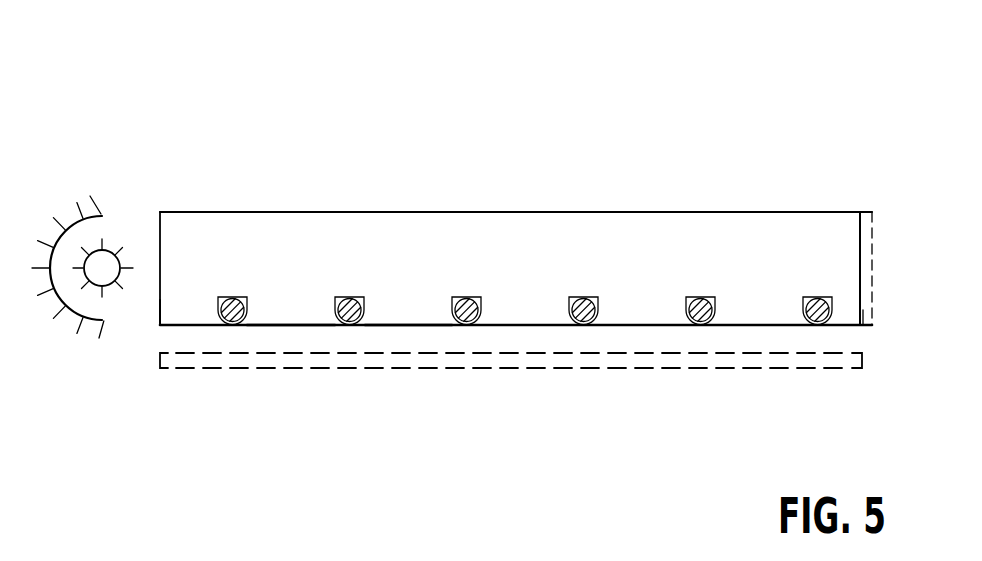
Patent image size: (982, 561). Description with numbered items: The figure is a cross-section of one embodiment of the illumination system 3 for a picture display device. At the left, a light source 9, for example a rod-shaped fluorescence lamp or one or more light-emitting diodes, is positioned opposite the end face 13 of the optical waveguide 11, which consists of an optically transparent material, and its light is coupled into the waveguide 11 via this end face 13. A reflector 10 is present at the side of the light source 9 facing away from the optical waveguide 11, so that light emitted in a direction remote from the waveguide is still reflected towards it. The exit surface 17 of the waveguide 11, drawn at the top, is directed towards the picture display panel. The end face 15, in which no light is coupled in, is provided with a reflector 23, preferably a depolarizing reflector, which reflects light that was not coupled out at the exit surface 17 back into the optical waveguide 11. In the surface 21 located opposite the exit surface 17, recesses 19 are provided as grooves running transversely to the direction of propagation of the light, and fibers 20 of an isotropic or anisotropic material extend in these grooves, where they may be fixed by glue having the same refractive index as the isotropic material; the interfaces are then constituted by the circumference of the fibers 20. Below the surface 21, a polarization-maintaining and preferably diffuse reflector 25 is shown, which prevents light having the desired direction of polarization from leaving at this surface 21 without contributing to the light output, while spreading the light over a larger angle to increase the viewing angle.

The illumination system 3 is at (792, 82).
The light source 9 is at (107, 262).
The reflector 10 is at (82, 323).
The optical waveguide 11 is at (747, 227).
The end face 13 is at (160, 305).
The end face 15 is at (860, 233).
The exit surface 17 is at (372, 212).
The recesses 19 is at (452, 297).
The fibers 20 is at (335, 297).
The surface 21 is at (398, 326).
The reflector 23 is at (864, 312).
The reflector 25 is at (650, 357).